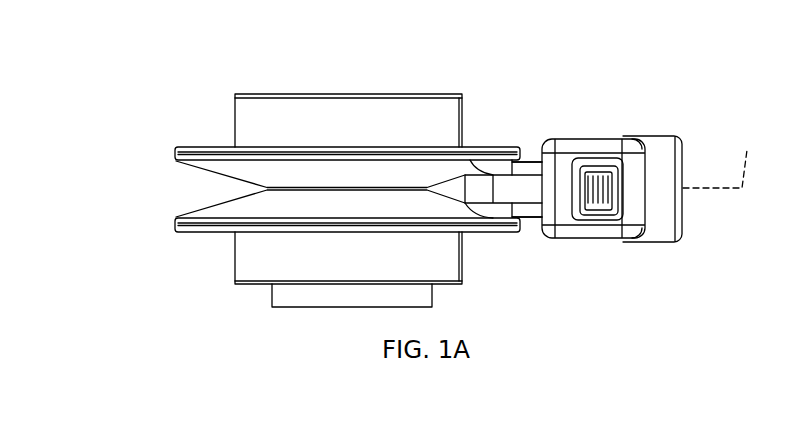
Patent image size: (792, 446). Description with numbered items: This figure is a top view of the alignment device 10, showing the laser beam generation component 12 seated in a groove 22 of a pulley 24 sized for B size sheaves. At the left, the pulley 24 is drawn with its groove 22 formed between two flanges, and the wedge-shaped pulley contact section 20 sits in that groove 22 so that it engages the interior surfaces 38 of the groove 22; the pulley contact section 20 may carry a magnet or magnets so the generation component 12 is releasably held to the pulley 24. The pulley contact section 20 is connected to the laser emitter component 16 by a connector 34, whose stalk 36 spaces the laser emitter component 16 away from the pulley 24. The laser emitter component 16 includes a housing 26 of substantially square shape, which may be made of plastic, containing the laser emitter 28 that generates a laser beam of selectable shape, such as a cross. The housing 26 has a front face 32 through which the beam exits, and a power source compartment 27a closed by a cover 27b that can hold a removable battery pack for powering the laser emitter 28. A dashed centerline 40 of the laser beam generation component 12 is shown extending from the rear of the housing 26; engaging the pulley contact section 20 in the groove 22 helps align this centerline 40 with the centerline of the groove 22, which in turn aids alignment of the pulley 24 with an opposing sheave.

The alignment device 10 is at (696, 84).
The laser beam generation component 12 is at (557, 110).
The laser emitter component 16 is at (566, 238).
The pulley contact section 20 is at (528, 150).
The groove 22 is at (208, 170).
The pulley 24 is at (208, 147).
The housing 26 is at (546, 240).
The power source compartment 27a is at (626, 239).
The cover 27b is at (683, 177).
The laser emitter 28 is at (582, 146).
The front face 32 is at (683, 203).
The connector 34 is at (527, 205).
The stalk 36 is at (527, 205).
The interior surfaces 38 is at (471, 160).
The centerline 40 is at (747, 148).